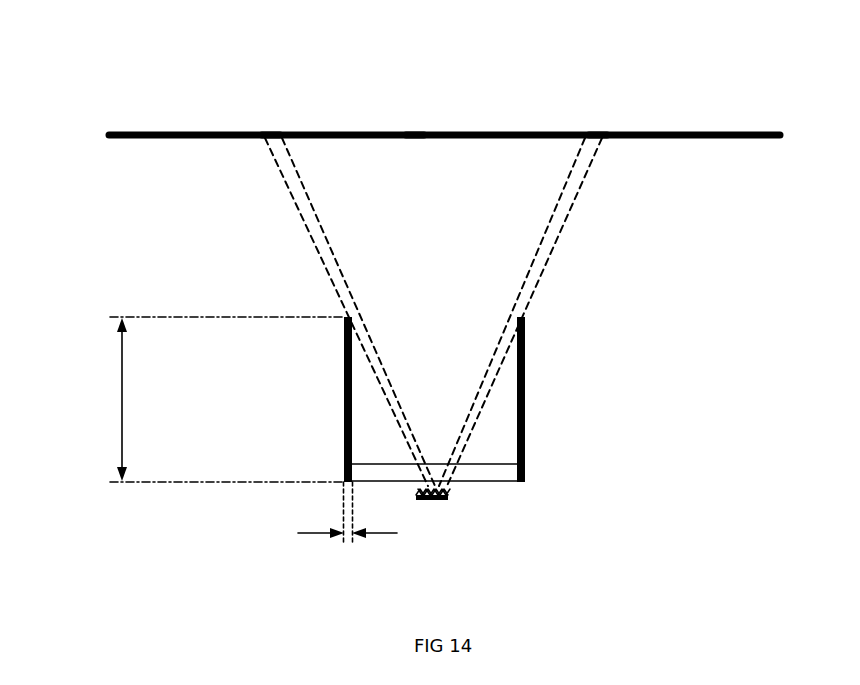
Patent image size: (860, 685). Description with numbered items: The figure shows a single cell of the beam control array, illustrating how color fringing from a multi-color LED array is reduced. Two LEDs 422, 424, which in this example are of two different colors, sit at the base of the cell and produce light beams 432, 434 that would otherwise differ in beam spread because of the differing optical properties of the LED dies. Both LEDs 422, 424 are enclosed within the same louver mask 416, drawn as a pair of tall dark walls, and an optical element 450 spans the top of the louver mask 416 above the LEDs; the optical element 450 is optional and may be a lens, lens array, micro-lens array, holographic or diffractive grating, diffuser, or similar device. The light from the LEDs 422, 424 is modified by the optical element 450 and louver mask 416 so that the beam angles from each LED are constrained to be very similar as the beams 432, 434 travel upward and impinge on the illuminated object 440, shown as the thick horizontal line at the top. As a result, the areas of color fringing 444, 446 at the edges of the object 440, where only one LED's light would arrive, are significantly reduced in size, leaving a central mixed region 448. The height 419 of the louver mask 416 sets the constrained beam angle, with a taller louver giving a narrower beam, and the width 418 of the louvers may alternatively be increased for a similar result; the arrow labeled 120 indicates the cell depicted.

The imaging device 120 is at (324, 411).
The louver mask 416 is at (523, 410).
The width of the louver 418 is at (313, 533).
The height of the louvers 419 is at (118, 396).
The LED 422 is at (428, 501).
The LED 424 is at (447, 498).
The light beam 432 is at (315, 222).
The light beam 434 is at (282, 177).
The illuminated object 440 is at (745, 132).
The area of color fringing 444 is at (271, 132).
The area of color fringing 446 is at (598, 132).
The field center 448 is at (415, 132).
The optical element 450 is at (500, 475).